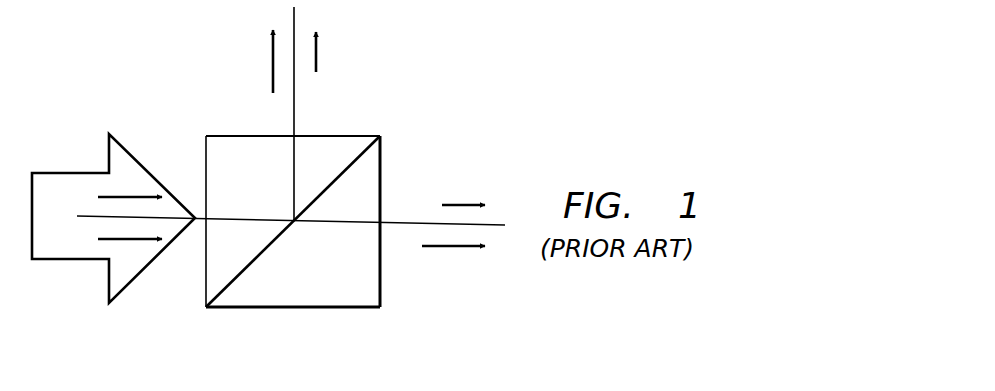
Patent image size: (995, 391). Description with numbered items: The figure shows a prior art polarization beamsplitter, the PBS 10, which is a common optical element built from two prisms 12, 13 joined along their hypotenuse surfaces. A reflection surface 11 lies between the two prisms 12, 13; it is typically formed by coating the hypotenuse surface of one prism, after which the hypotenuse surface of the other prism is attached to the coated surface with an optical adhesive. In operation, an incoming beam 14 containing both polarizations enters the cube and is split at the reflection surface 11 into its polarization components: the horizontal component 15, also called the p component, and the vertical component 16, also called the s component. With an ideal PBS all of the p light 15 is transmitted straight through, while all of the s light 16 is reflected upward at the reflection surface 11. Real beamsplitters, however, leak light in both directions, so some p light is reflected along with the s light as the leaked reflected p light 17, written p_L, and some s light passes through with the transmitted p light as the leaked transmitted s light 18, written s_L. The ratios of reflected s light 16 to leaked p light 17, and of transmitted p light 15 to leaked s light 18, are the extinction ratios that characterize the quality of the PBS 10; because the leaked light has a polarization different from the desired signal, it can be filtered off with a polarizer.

The polarization beamsplitter 10 is at (431, 86).
The reflection surface 11 is at (280, 233).
The prism 12 is at (258, 310).
The prism 13 is at (343, 135).
The incoming beam 14 is at (70, 173).
The horizontal component 15 is at (450, 268).
The vertical component 16 is at (255, 55).
The leaked reflected p light 17 is at (343, 53).
The leaked transmitted s light 18 is at (460, 173).